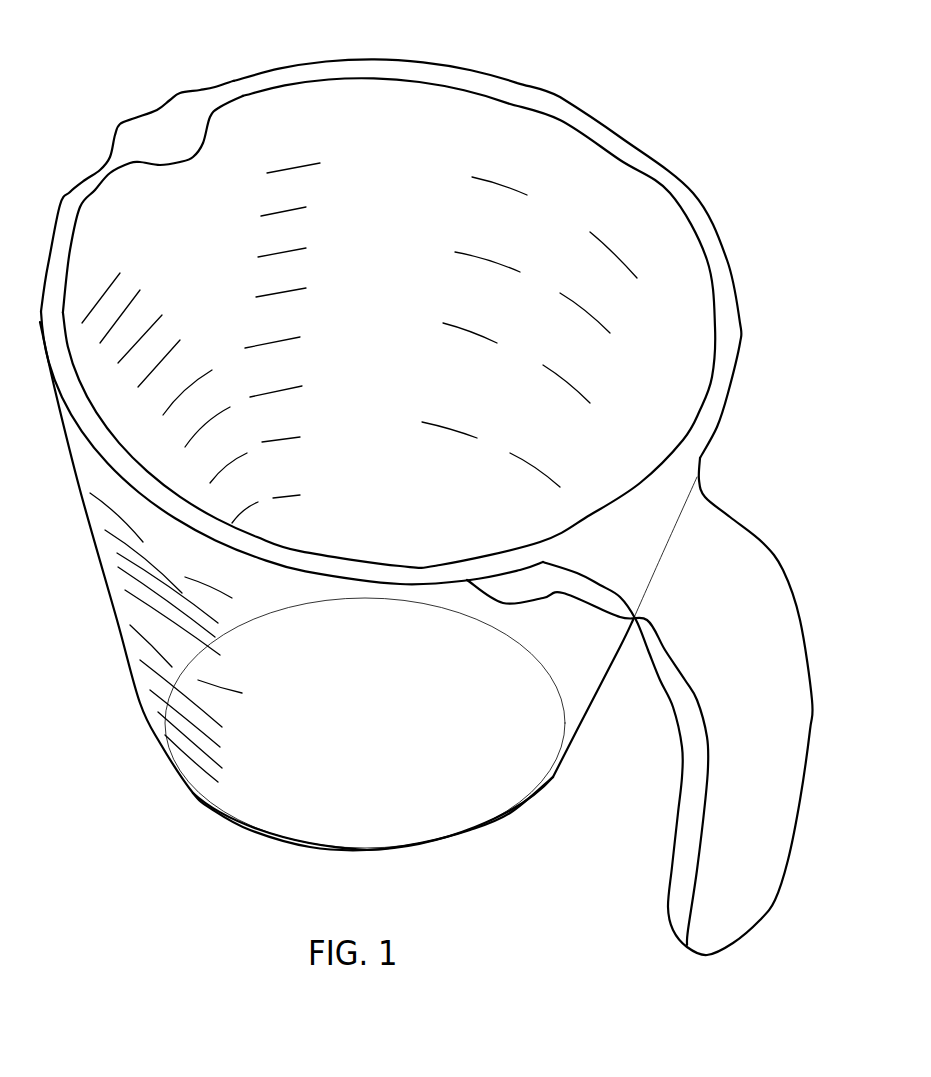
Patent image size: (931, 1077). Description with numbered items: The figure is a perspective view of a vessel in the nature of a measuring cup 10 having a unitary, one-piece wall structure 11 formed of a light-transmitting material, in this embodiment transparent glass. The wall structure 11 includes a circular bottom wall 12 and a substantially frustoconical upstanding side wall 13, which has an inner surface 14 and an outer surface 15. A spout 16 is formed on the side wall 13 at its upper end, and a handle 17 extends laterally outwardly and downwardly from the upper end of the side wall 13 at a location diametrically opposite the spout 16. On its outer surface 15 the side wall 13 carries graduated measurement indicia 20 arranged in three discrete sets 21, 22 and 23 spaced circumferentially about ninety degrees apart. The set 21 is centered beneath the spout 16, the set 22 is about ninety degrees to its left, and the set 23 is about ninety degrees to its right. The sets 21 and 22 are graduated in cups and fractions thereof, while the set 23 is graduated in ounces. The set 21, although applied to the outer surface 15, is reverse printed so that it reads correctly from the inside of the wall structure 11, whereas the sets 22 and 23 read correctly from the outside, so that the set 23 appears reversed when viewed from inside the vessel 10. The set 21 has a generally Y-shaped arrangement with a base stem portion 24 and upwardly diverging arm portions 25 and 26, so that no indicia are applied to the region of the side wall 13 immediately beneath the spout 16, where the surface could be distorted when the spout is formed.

The measuring cup 10 is at (641, 49).
The wall structure 11 is at (560, 88).
The bottom wall 12 is at (530, 746).
The side wall 13 is at (427, 117).
The inner surface 14 is at (391, 154).
The outer surface 15 is at (365, 733).
The spout 16 is at (162, 120).
The handle 17 is at (717, 537).
The graduated measurement indicia 20 is at (338, 93).
The first set of indicia 21 is at (155, 217).
The second set of indicia 22 is at (92, 600).
The third set of indicia 23 is at (637, 217).
The base stem portion 24 is at (320, 430).
The arm portion 25 is at (164, 316).
The arm portion 26 is at (351, 288).